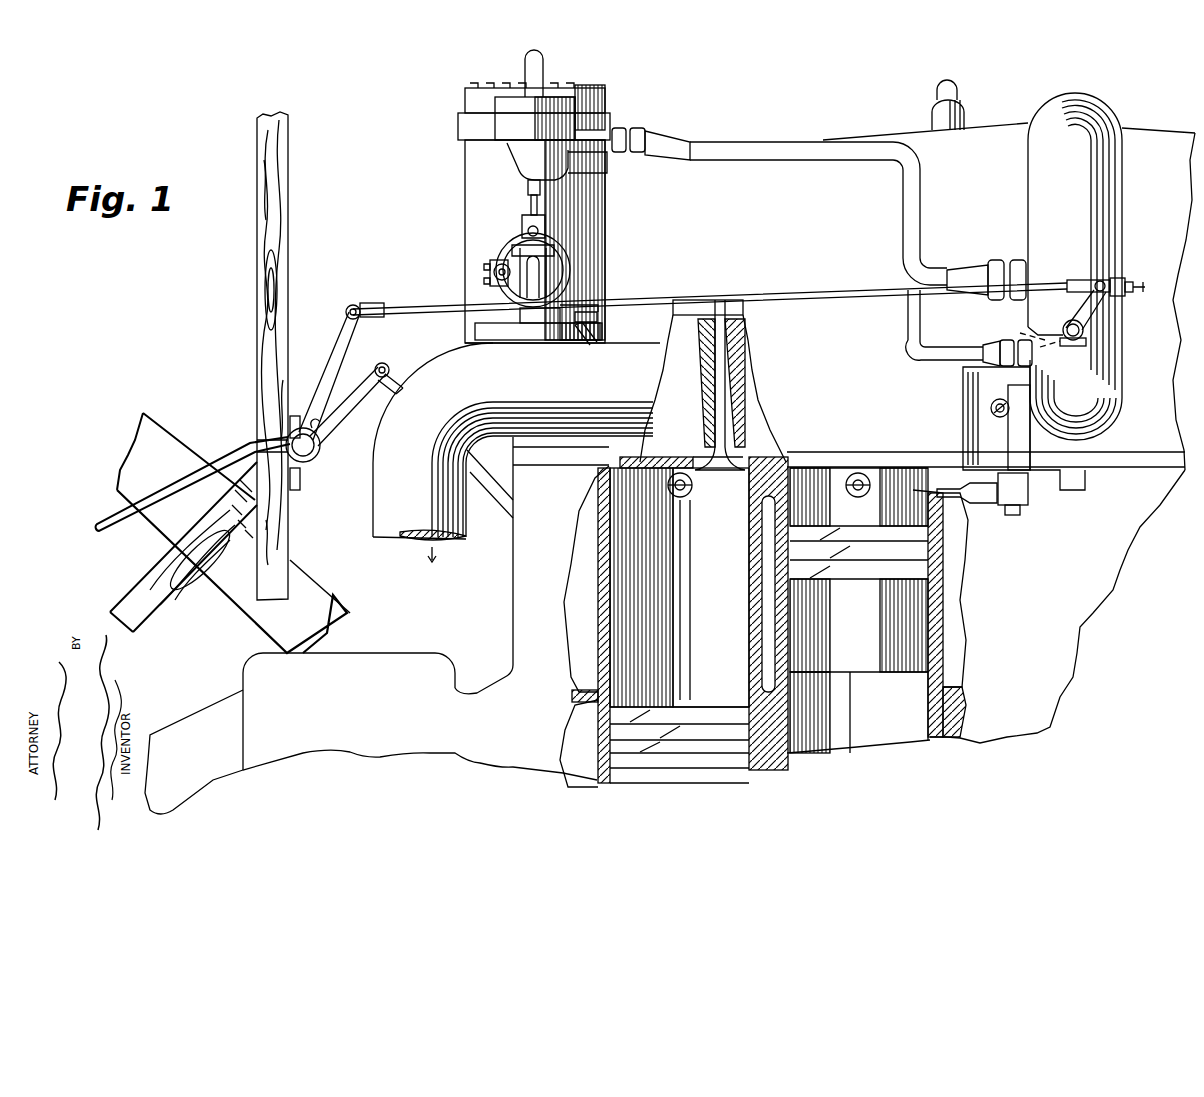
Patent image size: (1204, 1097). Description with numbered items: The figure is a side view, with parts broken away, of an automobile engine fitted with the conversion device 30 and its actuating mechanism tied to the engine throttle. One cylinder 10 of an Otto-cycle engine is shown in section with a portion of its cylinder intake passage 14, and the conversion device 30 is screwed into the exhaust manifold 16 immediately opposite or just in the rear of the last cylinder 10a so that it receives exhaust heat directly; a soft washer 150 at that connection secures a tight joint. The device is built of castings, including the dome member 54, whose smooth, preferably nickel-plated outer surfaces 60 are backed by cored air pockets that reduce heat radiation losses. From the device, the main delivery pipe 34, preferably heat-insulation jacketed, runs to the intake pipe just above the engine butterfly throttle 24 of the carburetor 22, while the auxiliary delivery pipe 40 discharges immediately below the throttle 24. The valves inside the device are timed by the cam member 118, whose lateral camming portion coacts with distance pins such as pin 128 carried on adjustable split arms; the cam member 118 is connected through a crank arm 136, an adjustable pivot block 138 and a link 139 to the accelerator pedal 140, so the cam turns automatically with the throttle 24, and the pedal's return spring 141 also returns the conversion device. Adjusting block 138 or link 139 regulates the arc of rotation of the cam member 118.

The cylinder 10 is at (913, 510).
The last cylinder 10a is at (600, 560).
The cylinder intake passage 14 is at (770, 421).
The exhaust manifold 16 is at (450, 363).
The carburetor 22 is at (965, 415).
The engine butterfly throttle 24 is at (1030, 336).
The conversion valve or device 30 is at (480, 216).
The main delivery pipe 34 is at (752, 160).
The auxiliary delivery pipe 40 is at (910, 312).
The dome member 54 is at (548, 84).
The outer surfaces 60 is at (466, 181).
The cam member 118 is at (568, 272).
The distance pin 128 is at (492, 270).
The crank arm 136 is at (597, 322).
The adjustable pivot block 138 is at (592, 337).
The link 139 is at (447, 312).
The accelerator pedal 140 is at (207, 467).
The return spring 141 is at (320, 447).
The soft washer 150 is at (552, 342).